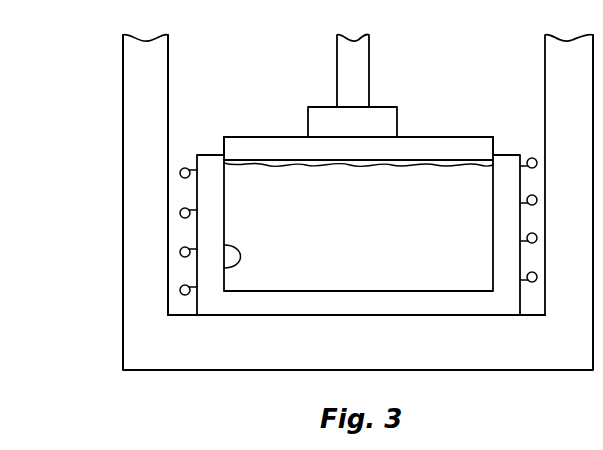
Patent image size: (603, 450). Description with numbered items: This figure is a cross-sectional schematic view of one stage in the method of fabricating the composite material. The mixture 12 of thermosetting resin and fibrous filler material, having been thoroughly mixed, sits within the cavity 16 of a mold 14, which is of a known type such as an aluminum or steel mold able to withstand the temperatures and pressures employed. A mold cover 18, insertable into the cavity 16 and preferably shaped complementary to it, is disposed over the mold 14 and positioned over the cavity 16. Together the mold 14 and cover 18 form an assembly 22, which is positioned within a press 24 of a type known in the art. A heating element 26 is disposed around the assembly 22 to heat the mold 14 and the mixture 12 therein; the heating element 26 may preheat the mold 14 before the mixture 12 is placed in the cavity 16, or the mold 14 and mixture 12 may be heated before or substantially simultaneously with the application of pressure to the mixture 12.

The press 24 is at (143, 87).
The mold cover 18 is at (265, 145).
The mold 14 is at (207, 163).
The mixture 12 is at (287, 216).
The assembly 22 is at (190, 192).
The cavity 16 is at (224, 268).
The heating element 26 is at (182, 292).